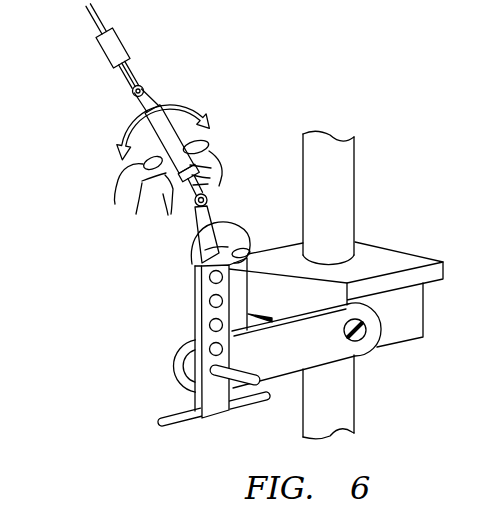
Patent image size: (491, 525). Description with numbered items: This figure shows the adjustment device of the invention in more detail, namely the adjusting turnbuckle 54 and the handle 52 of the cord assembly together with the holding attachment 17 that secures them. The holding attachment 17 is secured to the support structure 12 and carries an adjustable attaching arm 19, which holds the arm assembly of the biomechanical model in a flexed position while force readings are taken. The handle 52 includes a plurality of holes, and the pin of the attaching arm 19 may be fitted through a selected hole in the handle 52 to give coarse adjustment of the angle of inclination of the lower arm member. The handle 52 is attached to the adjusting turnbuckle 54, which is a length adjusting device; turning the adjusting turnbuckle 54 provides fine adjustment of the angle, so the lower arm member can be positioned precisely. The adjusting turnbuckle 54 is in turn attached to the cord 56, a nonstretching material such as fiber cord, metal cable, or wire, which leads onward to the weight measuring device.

The cord 56 is at (94, 24).
The adjusting turnbuckle 54 is at (176, 204).
The support structure 12 is at (342, 185).
The holding attachment 17 is at (412, 260).
The handle 52 is at (210, 401).
The attaching arm 19 is at (293, 362).